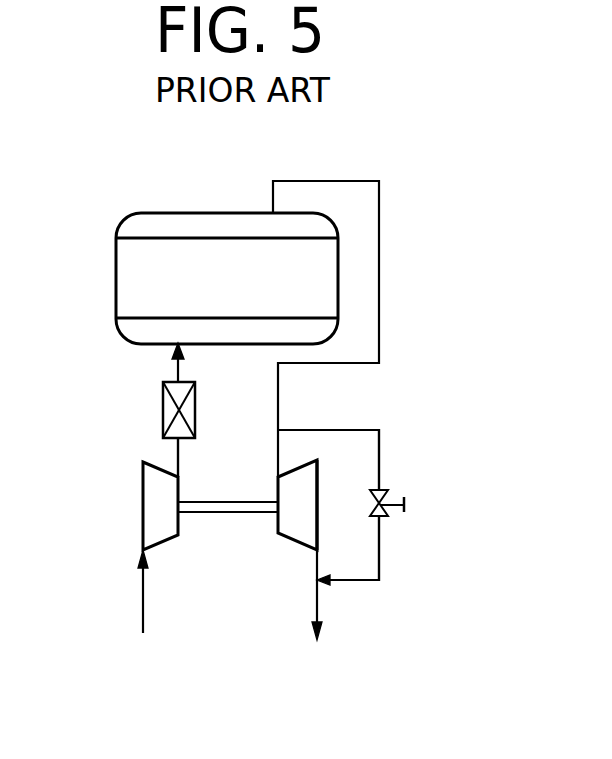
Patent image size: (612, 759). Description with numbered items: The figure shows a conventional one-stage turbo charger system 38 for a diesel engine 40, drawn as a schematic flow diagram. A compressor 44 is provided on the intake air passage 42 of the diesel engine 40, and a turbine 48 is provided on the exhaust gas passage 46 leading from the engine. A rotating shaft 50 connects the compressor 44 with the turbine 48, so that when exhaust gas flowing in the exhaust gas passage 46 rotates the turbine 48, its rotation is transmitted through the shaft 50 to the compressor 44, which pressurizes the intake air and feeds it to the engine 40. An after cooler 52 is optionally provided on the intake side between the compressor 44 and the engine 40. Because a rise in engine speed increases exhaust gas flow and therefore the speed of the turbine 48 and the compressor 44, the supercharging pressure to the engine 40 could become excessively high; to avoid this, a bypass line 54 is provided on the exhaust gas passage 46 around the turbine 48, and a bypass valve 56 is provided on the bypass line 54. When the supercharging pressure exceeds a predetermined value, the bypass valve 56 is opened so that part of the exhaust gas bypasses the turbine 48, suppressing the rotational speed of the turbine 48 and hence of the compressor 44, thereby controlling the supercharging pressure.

The turbo charger system 38 is at (470, 368).
The diesel engine 40 is at (135, 293).
The intake air passage 42 is at (178, 450).
The compressor 44 is at (143, 512).
The exhaust gas passage 46 is at (278, 450).
The turbine 48 is at (300, 522).
The rotating shaft 50 is at (210, 510).
The after cooler 52 is at (163, 397).
The bypass line 54 is at (380, 455).
The bypass valve 56 is at (384, 516).